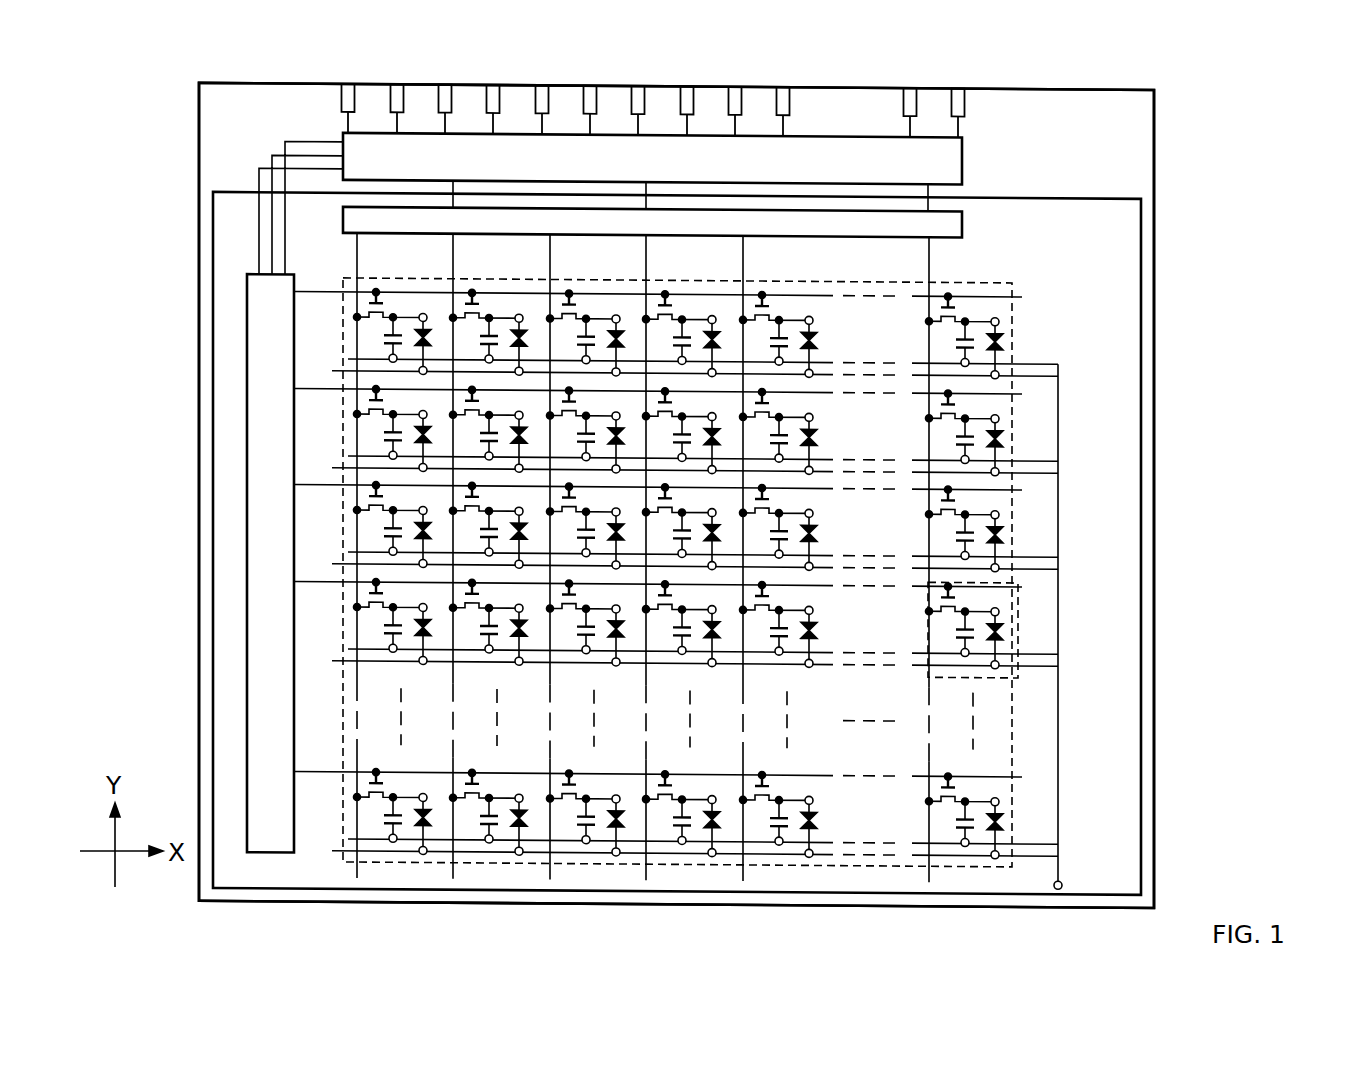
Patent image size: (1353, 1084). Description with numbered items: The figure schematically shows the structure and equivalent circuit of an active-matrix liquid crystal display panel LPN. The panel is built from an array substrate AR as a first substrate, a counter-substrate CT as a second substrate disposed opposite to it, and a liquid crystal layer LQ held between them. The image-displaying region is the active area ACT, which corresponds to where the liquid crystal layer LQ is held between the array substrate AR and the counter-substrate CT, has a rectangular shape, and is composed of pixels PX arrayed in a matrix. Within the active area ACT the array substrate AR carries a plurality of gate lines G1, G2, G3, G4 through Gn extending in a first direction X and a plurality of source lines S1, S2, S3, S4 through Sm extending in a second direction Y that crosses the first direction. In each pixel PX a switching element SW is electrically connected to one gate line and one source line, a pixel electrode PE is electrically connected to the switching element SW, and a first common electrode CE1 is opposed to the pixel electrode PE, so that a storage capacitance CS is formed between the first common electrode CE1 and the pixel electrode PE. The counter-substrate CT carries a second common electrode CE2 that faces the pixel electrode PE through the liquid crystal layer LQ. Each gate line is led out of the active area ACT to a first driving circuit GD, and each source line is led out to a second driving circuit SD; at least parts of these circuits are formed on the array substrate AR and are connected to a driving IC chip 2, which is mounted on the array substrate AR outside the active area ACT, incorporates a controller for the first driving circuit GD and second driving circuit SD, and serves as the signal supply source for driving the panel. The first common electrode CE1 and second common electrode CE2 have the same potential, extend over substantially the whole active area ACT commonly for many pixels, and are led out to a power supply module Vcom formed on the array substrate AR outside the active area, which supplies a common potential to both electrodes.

The liquid crystal display panel LPN is at (1208, 96).
The array substrate AR is at (1134, 152).
The counter-substrate CT is at (1141, 262).
The driving IC chip 2 is at (962, 134).
The second driving circuit SD is at (962, 220).
The first driving circuit GD is at (246, 694).
The active area ACT is at (1012, 412).
The gate line G1 is at (315, 290).
The gate line G2 is at (315, 387).
The gate line G3 is at (315, 484).
The gate line G4 is at (315, 581).
The gate line Gn is at (315, 771).
The source line S1 is at (357, 254).
The source line S2 is at (453, 254).
The source line S3 is at (550, 254).
The source line S4 is at (646, 254).
The source line Sm is at (929, 256).
The pixel PX is at (1012, 672).
The switching element SW is at (916, 602).
The storage capacitance CS is at (939, 637).
The pixel electrode PE is at (999, 606).
The liquid crystal layer LQ is at (1004, 628).
The first common electrode CE1 is at (967, 656).
The second common electrode CE2 is at (1000, 660).
The power supply module Vcom is at (1059, 889).